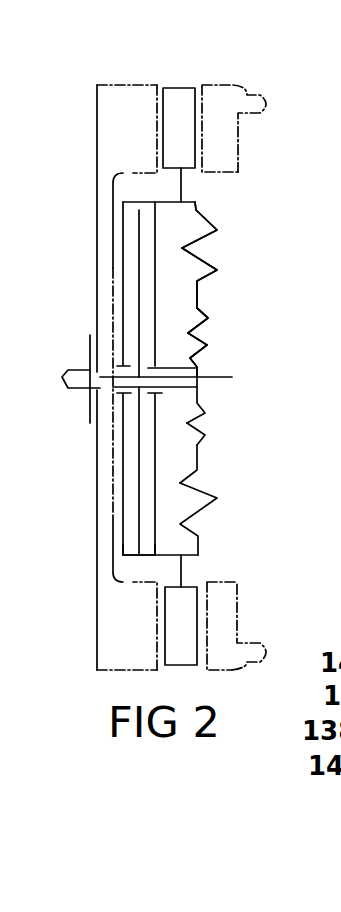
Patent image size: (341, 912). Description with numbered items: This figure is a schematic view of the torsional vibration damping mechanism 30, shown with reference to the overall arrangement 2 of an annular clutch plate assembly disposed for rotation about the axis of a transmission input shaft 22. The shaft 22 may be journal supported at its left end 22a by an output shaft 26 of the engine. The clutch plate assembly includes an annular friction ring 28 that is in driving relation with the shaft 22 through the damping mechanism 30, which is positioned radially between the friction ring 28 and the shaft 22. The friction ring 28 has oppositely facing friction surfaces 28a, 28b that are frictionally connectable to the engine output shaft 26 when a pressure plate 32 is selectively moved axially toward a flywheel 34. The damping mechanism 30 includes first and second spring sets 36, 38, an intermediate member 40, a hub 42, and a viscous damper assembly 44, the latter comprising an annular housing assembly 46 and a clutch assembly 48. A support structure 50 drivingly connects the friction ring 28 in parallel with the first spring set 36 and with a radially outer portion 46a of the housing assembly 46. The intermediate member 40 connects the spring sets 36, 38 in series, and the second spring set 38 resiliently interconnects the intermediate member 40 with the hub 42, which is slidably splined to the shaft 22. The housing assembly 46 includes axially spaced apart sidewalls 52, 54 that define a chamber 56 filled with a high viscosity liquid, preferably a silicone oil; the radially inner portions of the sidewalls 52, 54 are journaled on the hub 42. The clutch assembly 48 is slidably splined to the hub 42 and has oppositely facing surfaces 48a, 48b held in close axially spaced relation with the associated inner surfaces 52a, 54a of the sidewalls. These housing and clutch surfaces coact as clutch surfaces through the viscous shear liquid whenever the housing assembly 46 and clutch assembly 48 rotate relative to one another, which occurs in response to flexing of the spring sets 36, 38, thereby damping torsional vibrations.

The switch assembly 2 is at (310, 225).
The transmission input shaft 22 is at (232, 387).
The left end of shaft 22a is at (100, 392).
The output shaft 26 is at (61, 377).
The friction ring 28 is at (184, 75).
The friction surface 28a is at (152, 105).
The friction surface 28b is at (206, 107).
The torsional vibration damping mechanism 30 is at (238, 270).
The pressure plate 32 is at (268, 101).
The flywheel 34 is at (96, 110).
The first spring set 36 is at (218, 247).
The second spring set 38 is at (216, 332).
The intermediate member 40 is at (214, 302).
The hub 42 is at (206, 361).
The viscous damper assembly 44 is at (181, 467).
The housing assembly 46 is at (127, 184).
The radially outer portion of housing assembly 46a is at (135, 583).
The clutch assembly 48 is at (122, 242).
The clutch surface 48a is at (138, 487).
The clutch surface 48b is at (142, 528).
The support structure 50 is at (209, 562).
The sidewall 52 is at (126, 236).
The inner surface of sidewall 52a is at (126, 434).
The sidewall 54 is at (155, 224).
The inner surface of sidewall 54a is at (140, 532).
The chamber 56 is at (128, 273).